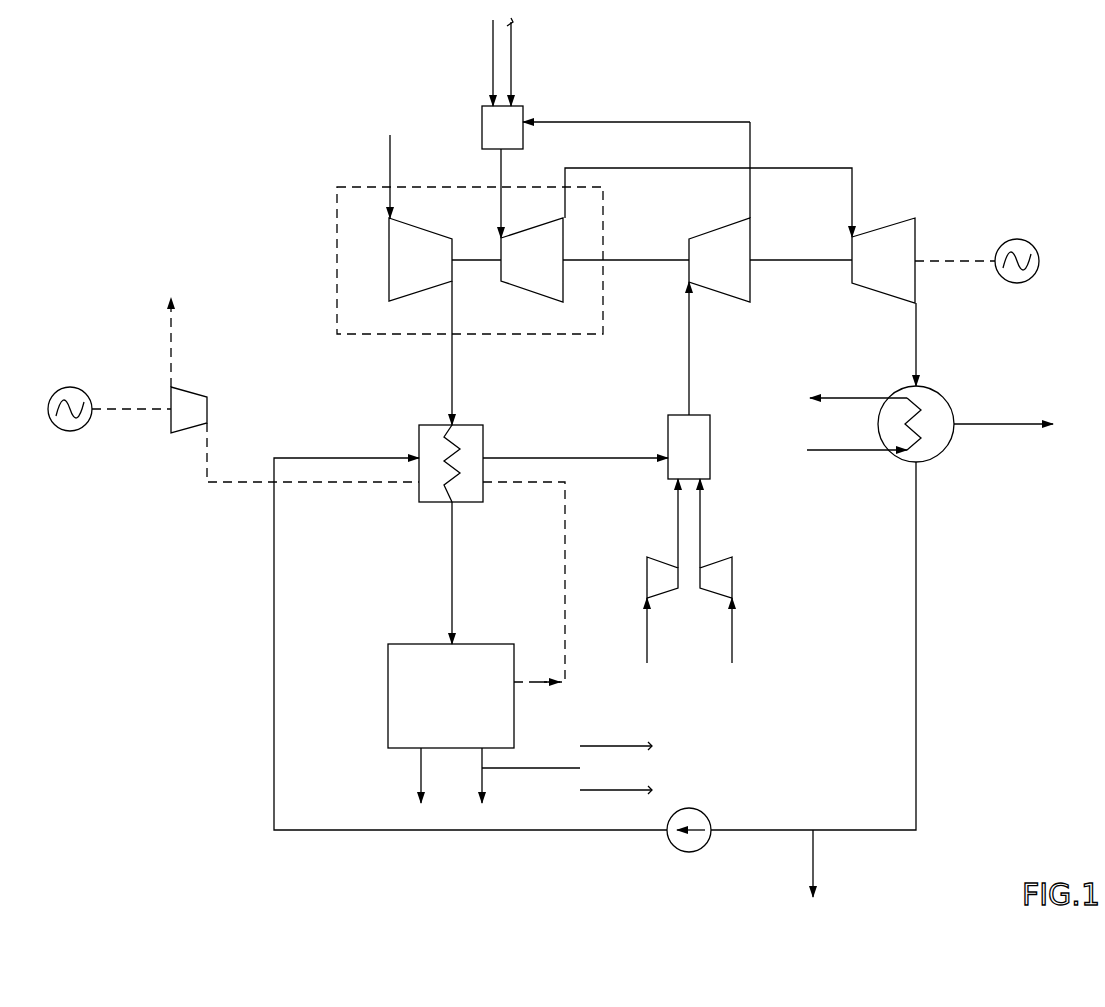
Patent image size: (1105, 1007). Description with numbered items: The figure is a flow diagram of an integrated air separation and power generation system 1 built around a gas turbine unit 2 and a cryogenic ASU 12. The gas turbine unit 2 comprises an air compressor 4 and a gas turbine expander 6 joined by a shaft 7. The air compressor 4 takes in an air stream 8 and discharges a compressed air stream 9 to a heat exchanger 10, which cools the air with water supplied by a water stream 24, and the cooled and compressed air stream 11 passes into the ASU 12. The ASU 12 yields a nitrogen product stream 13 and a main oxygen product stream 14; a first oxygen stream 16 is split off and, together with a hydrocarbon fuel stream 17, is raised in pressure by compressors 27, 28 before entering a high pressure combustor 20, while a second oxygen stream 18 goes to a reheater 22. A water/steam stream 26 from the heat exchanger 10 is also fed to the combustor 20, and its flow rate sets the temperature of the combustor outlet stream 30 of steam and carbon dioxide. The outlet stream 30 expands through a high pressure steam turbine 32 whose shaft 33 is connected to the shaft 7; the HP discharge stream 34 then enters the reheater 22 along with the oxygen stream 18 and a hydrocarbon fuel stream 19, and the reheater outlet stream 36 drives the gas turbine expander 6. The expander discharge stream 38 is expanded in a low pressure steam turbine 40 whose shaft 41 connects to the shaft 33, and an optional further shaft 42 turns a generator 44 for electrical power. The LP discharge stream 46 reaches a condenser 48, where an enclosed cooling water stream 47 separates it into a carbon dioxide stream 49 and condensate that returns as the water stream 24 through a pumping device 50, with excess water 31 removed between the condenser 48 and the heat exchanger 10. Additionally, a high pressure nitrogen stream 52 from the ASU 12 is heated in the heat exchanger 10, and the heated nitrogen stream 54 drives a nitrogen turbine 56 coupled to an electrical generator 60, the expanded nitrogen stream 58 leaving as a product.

The system 1 is at (983, 127).
The gas turbine unit 2 is at (345, 219).
The air compressor 4 is at (402, 252).
The gas turbine expander 6 is at (550, 283).
The shaft 7 is at (476, 261).
The air stream 8 is at (390, 168).
The compressed air stream 9 is at (452, 383).
The heat exchanger 10 is at (420, 503).
The cooled and compressed air stream 11 is at (452, 572).
The cryogenic ASU 12 is at (398, 702).
The nitrogen product stream 13 is at (420, 766).
The main oxygen product stream 14 is at (480, 758).
The first oxygen stream 16 is at (731, 640).
The hydrocarbon fuel stream 17 is at (648, 640).
The second oxygen stream 18 is at (511, 42).
The hydrocarbon fuel stream 19 is at (493, 44).
The high pressure combustor 20 is at (711, 438).
The reheater 22 is at (518, 118).
The water stream 24 is at (273, 615).
The water/steam stream 26 is at (588, 457).
The oxygen compressor 27 is at (733, 580).
The fuel compressor 28 is at (645, 580).
The combustor outlet stream 30 is at (690, 372).
The excess water 31 is at (812, 840).
The high pressure steam turbine 32 is at (718, 242).
The shaft 33 is at (623, 261).
The HP discharge stream 34 is at (750, 144).
The reheater outlet stream 36 is at (501, 182).
The expander discharge stream 38 is at (833, 167).
The low pressure steam turbine 40 is at (893, 236).
The shaft 41 is at (803, 261).
The further shaft 42 is at (963, 263).
The generator 44 is at (1018, 239).
The LP discharge stream 46 is at (918, 345).
The cooling water stream 47 is at (870, 451).
The condenser 48 is at (935, 455).
The carbon dioxide stream 49 is at (996, 425).
The pumping device 50 is at (700, 850).
The high pressure nitrogen stream 52 is at (566, 544).
The heated high pressure nitrogen stream 54 is at (251, 483).
The nitrogen turbine 56 is at (190, 392).
The expanded nitrogen stream 58 is at (171, 358).
The electrical generator 60 is at (80, 430).